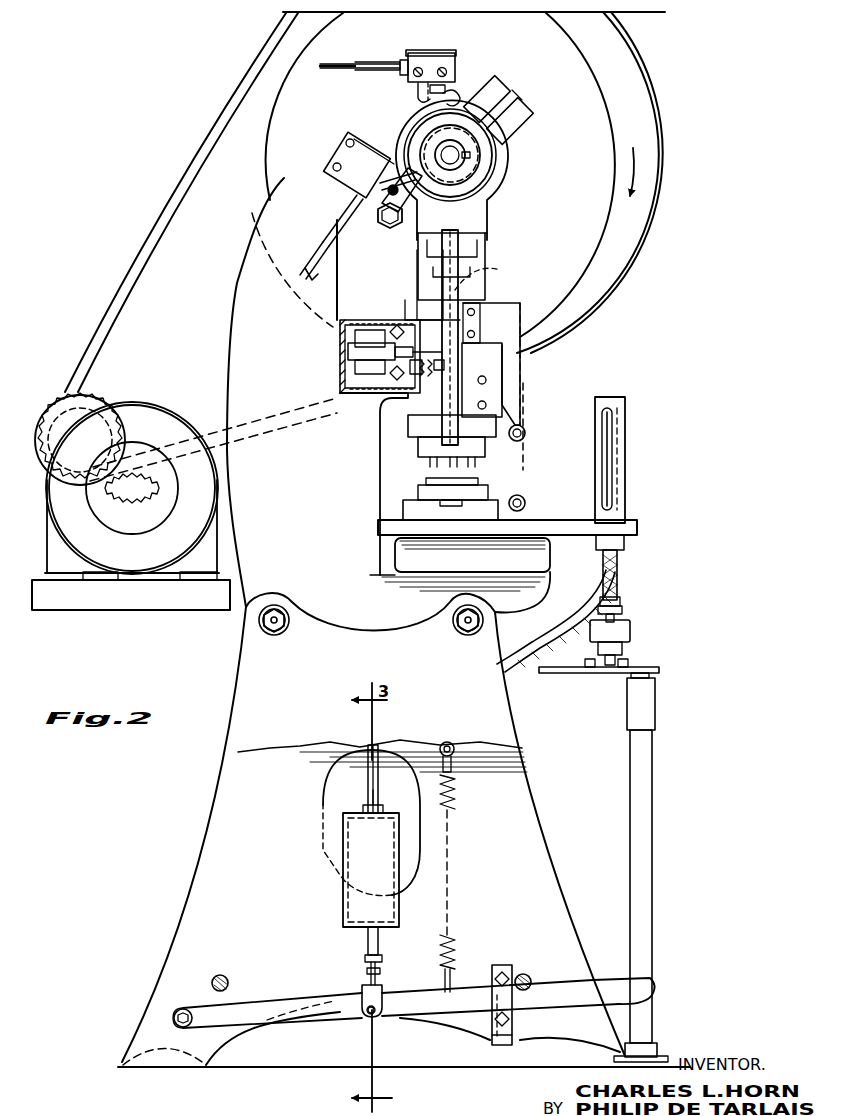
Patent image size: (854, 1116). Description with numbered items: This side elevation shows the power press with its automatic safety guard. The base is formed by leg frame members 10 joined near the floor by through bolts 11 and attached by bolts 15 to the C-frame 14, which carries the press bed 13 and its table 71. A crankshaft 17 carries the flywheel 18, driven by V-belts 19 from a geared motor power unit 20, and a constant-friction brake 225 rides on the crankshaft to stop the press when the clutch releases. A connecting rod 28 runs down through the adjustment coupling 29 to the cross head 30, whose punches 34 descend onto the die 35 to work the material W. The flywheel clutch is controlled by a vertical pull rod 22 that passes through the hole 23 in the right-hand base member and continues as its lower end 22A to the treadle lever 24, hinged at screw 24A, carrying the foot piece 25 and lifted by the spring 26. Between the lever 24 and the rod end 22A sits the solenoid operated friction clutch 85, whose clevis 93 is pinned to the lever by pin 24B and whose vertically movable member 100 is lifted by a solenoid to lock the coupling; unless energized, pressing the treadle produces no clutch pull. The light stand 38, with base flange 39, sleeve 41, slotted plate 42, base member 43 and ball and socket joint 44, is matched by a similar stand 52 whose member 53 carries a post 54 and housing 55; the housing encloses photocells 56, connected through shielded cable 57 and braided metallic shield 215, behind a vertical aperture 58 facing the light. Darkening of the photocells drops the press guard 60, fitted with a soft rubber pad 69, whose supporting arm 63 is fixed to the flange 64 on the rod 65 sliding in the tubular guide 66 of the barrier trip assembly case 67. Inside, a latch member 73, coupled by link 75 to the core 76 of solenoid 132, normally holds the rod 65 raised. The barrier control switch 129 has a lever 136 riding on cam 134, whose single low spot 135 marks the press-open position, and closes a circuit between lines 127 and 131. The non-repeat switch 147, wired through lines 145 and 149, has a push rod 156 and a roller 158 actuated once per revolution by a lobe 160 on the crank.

The leg frame members 10 is at (248, 724).
The through bolts 11 is at (226, 978).
The press bed 13 is at (540, 556).
The C-frame 14 is at (265, 568).
The bolts 15 is at (272, 638).
The crankshaft 17 is at (462, 162).
The flywheel 18 is at (637, 117).
The V-belts 19 is at (178, 196).
The geared motor power unit 20 is at (143, 425).
The vertical pull rod 22 is at (368, 754).
The lower end of clutch pull rod 22A is at (366, 783).
The hole 23 is at (326, 778).
The treadle lever 24 is at (337, 1018).
The screw 24A is at (172, 1020).
The pin 24B is at (378, 1014).
The foot piece 25 is at (615, 975).
The spring 26 is at (456, 945).
The connecting rod 28 is at (487, 220).
The adjustment coupling 29 is at (470, 272).
The cross head 30 is at (405, 413).
The punches 34 is at (436, 462).
The die 35 is at (420, 512).
The material W is at (466, 480).
The light stand 38 is at (642, 882).
The base flange 39 is at (658, 1052).
The sleeve 41 is at (642, 708).
The slotted plate 42 is at (562, 672).
The base member 43 is at (624, 650).
The ball and socket joint 44 is at (632, 631).
The stand 52 is at (658, 818).
The member 53 is at (624, 598).
The post 54 is at (620, 574).
The housing 55 is at (626, 405).
The photocells 56 is at (620, 462).
The shielded cable 57 is at (562, 630).
The vertical aperture 58 is at (612, 433).
The press guard 60 is at (527, 383).
The supporting arm 63 is at (490, 330).
The forwardly extending flange 64 is at (483, 302).
The vertically movable rod 65 is at (478, 280).
The tubular guide 66 is at (418, 303).
The barrier trip assembly case 67 is at (366, 398).
The soft rubber pad 69 is at (526, 428).
The table 71 is at (637, 520).
The latch member 73 is at (438, 376).
The link 75 is at (436, 350).
The solenoid core 76 is at (394, 336).
The solenoid operated friction clutch 85 is at (342, 841).
The clevis 93 is at (362, 992).
The vertically movable member 100 is at (366, 940).
The line 127 is at (303, 268).
The barrier control switch 129 is at (368, 176).
The line 131 is at (323, 285).
The solenoid 132 is at (358, 338).
The cam 134 is at (485, 162).
The low spot 135 is at (428, 160).
The lever 136 is at (430, 205).
The line 145 is at (340, 76).
The non-repeat switch 147 is at (460, 52).
The line 149 is at (338, 64).
The push rod 156 is at (457, 88).
The roller 158 is at (462, 96).
The lobe 160 is at (490, 97).
The braided metallic shield 215 is at (602, 582).
The brake 225 is at (497, 150).